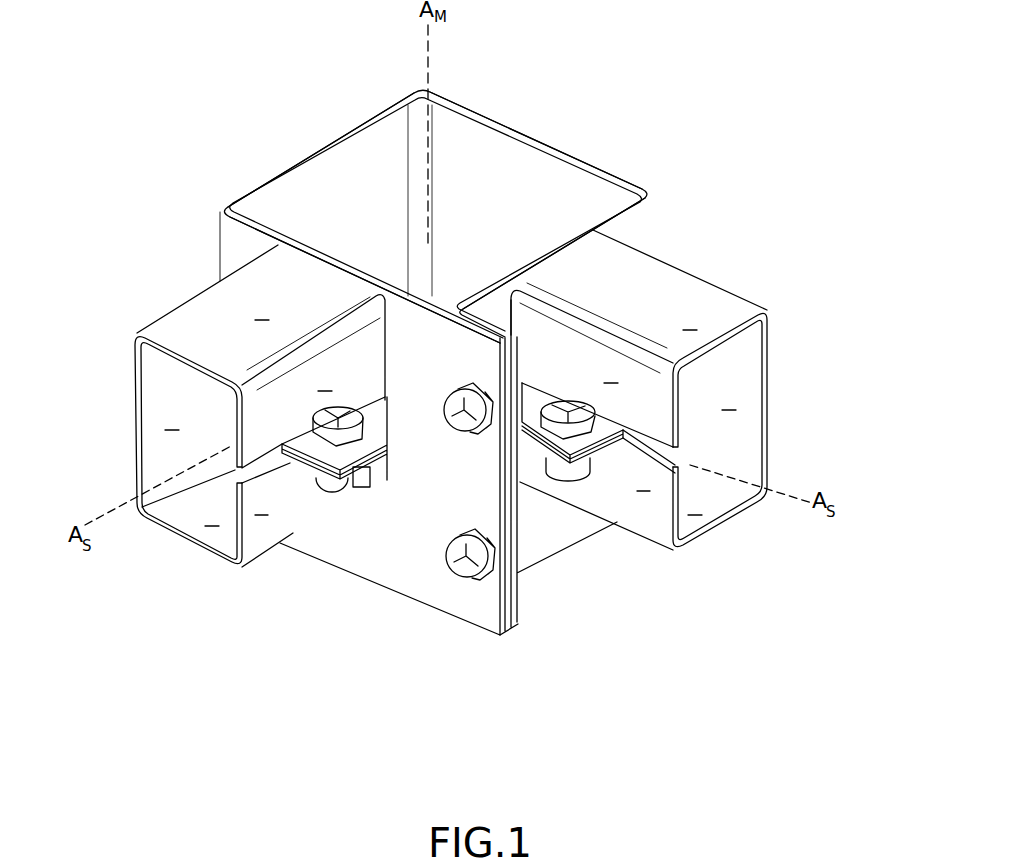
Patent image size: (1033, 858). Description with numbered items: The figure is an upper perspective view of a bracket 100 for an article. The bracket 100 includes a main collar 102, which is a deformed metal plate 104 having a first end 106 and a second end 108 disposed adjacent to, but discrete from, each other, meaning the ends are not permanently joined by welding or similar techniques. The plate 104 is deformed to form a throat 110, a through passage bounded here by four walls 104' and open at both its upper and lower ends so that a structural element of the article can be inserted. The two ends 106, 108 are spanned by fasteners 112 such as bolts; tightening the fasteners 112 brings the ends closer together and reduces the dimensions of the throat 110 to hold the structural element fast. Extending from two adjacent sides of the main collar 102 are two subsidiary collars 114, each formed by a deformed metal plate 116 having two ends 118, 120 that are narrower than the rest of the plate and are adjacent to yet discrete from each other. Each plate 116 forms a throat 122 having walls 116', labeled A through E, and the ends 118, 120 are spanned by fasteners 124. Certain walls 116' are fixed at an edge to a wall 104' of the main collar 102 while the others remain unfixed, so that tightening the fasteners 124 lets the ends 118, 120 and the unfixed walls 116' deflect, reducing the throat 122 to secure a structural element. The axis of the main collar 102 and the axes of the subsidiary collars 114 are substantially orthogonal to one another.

The bracket 100 is at (668, 77).
The main collar 102 is at (552, 140).
The deformed metal plate 104 is at (536, 122).
The walls 104' is at (473, 201).
The first end 106 is at (480, 603).
The second end 108 is at (527, 595).
The throat 110 is at (538, 187).
The fasteners 112 is at (460, 427).
The subsidiary collars 114 is at (167, 326).
The deformed metal plate 116 is at (451, 438).
The walls 116' is at (457, 432).
The end 118 is at (300, 483).
The end 120 is at (306, 437).
The throat 122 is at (190, 508).
The fasteners 124 is at (358, 477).